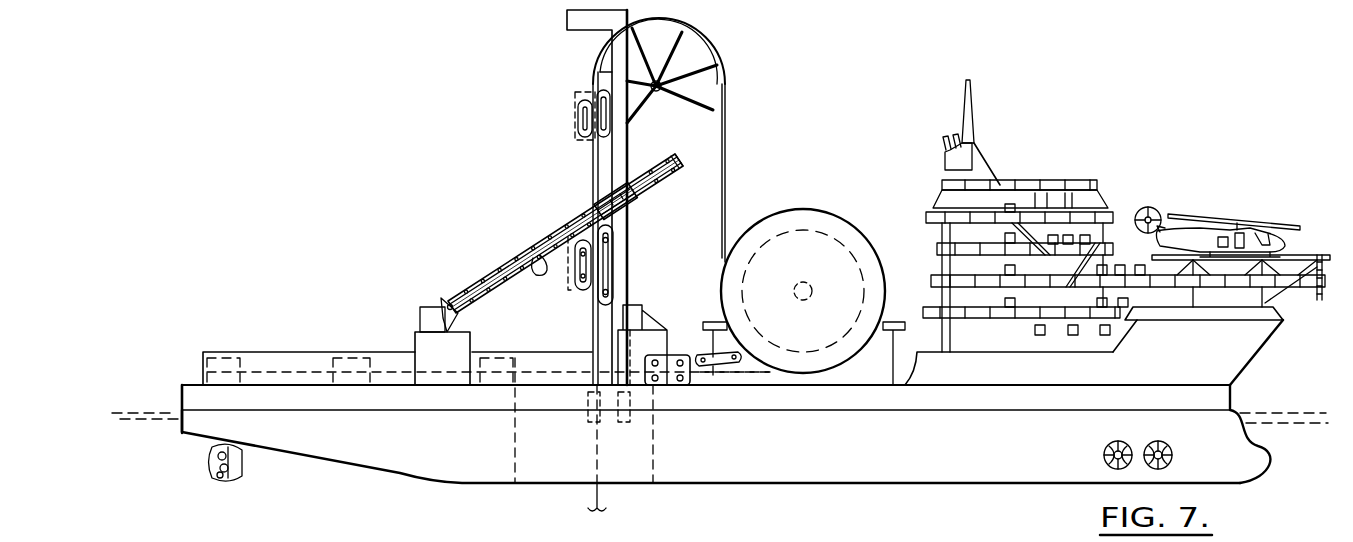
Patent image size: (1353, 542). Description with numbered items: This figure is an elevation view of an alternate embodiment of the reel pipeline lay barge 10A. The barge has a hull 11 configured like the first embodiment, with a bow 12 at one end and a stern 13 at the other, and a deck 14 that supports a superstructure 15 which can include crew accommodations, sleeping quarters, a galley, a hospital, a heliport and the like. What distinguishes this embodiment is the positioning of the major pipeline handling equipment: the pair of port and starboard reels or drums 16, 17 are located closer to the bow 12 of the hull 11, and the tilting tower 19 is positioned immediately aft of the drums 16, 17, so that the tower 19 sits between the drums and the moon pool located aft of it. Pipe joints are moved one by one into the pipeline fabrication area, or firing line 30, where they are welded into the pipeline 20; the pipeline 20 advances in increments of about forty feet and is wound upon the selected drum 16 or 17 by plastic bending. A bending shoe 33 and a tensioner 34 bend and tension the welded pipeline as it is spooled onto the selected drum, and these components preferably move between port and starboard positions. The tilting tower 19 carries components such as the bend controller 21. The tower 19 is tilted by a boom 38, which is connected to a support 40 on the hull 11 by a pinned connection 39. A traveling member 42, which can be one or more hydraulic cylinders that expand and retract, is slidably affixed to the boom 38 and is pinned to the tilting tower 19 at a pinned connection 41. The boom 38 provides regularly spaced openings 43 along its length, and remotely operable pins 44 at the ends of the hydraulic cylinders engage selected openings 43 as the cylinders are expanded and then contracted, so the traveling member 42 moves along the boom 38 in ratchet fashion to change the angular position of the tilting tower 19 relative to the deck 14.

The reel pipeline lay barge 10A is at (1108, 141).
The hull 11 is at (1262, 453).
The bow 12 is at (1272, 333).
The stern 13 is at (182, 414).
The deck 14 is at (336, 323).
The superstructure 15 is at (1107, 204).
The drum 16 is at (813, 264).
The drum 17 is at (797, 218).
The tilting tower 19 is at (612, 145).
The pipeline 20 is at (727, 150).
The bend controller 21 is at (705, 36).
The firing line 30 is at (565, 352).
The bending shoe 33 is at (704, 356).
The tensioner 34 is at (677, 387).
The boom 38 is at (497, 268).
The pinned connection 39 is at (447, 301).
The support 40 is at (423, 320).
The pinned connection 41 is at (667, 187).
The traveling member 42 is at (612, 186).
The openings 43 is at (545, 276).
The pins 44 is at (585, 206).